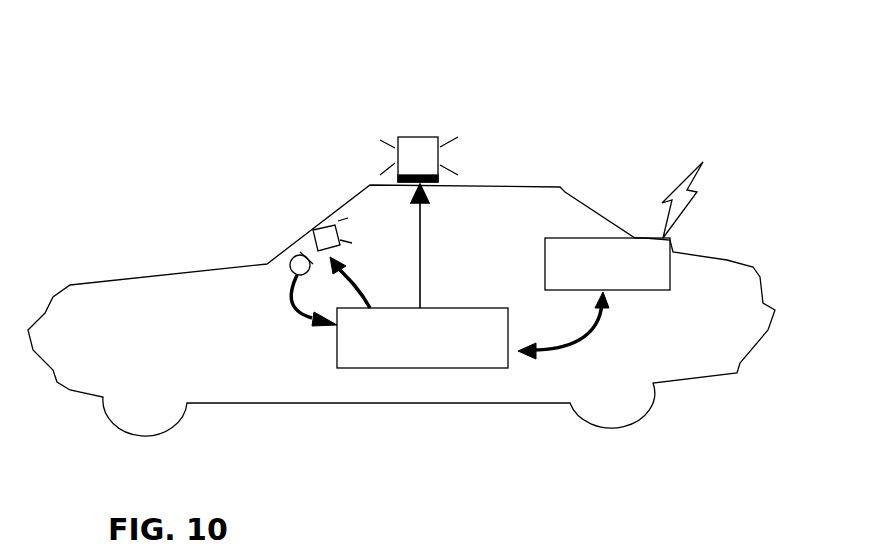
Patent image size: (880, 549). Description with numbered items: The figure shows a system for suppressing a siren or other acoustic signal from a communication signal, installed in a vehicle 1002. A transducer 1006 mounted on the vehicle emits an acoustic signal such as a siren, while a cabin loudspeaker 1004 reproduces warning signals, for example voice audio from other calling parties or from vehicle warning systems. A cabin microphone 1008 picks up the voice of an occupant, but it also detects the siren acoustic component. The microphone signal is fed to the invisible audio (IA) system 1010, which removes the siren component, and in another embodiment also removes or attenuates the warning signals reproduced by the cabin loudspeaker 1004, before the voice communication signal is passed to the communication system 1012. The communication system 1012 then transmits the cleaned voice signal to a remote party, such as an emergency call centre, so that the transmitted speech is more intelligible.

The vehicle 1002 is at (135, 283).
The cabin loudspeaker 1004 is at (314, 230).
The transducer 1006 is at (527, 92).
The microphone 1008 is at (289, 278).
The invisible audio (IA) system 1010 is at (448, 378).
The communication system 1012 is at (625, 286).